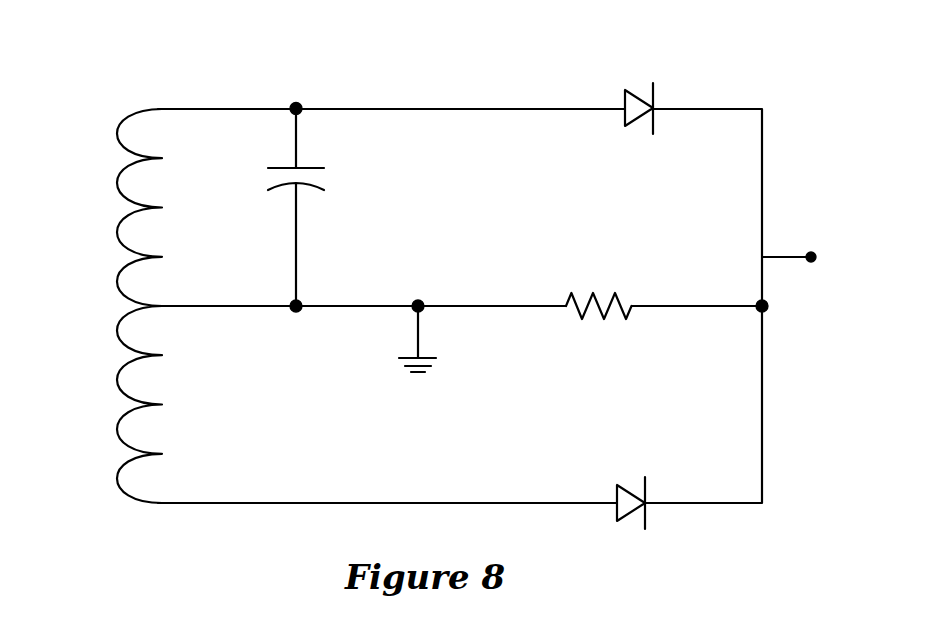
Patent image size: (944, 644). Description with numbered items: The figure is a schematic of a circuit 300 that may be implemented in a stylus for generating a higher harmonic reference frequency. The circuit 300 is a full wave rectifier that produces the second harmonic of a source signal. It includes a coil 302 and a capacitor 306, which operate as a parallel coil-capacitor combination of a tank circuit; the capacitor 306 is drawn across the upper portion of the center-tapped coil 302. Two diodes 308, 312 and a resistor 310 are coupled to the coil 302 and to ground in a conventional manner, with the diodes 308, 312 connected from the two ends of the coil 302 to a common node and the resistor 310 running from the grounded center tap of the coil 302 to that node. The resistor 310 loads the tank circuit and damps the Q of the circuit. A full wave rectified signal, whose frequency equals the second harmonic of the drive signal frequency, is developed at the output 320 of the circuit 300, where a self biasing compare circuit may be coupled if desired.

The circuit 300 is at (172, 77).
The coil 302 is at (116, 280).
The capacitor 306 is at (310, 167).
The diode 308 is at (643, 98).
The resistor 310 is at (585, 296).
The diode 312 is at (628, 512).
The output 320 is at (784, 256).